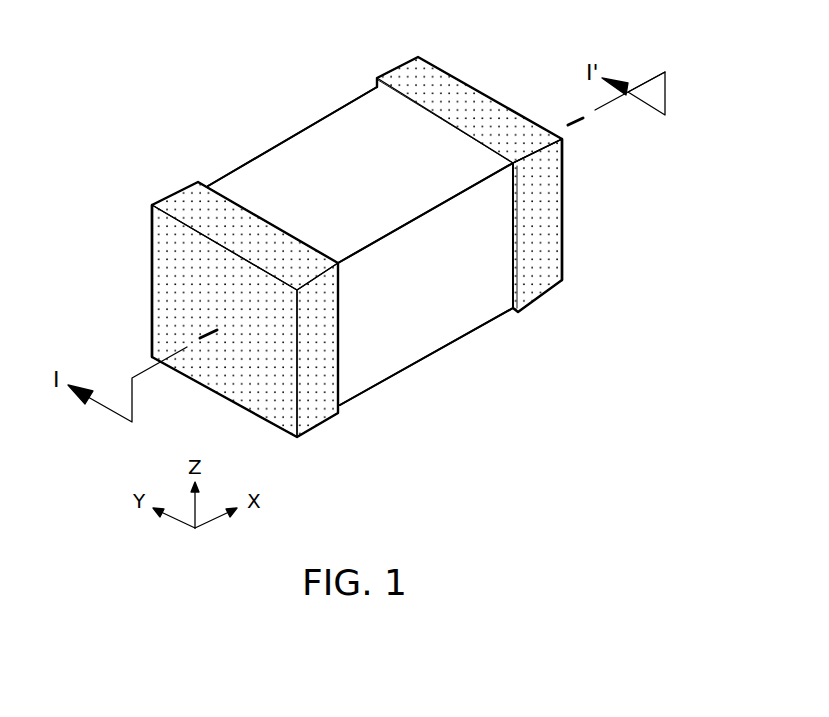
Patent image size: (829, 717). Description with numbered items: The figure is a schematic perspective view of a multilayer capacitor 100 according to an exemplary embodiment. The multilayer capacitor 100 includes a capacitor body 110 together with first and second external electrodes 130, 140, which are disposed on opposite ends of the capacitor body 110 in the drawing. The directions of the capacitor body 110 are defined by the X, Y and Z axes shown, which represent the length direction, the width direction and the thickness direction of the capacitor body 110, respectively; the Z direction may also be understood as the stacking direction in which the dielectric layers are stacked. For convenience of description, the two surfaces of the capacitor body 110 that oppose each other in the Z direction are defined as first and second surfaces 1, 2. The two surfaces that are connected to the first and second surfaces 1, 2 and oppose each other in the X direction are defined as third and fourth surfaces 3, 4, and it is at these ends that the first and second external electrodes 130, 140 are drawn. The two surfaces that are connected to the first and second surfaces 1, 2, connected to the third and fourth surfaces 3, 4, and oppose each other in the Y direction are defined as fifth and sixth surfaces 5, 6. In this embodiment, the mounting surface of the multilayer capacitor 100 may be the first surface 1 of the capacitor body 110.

The multilayer capacitor 100 is at (212, 36).
The capacitor body 110 is at (433, 143).
The first external electrode 130 is at (158, 272).
The second external electrode 140 is at (552, 238).
The first surface 1 is at (363, 362).
The second surface 2 is at (362, 120).
The third surface 3 is at (160, 322).
The fourth surface 4 is at (560, 186).
The fifth surface 5 is at (304, 150).
The sixth surface 6 is at (420, 327).